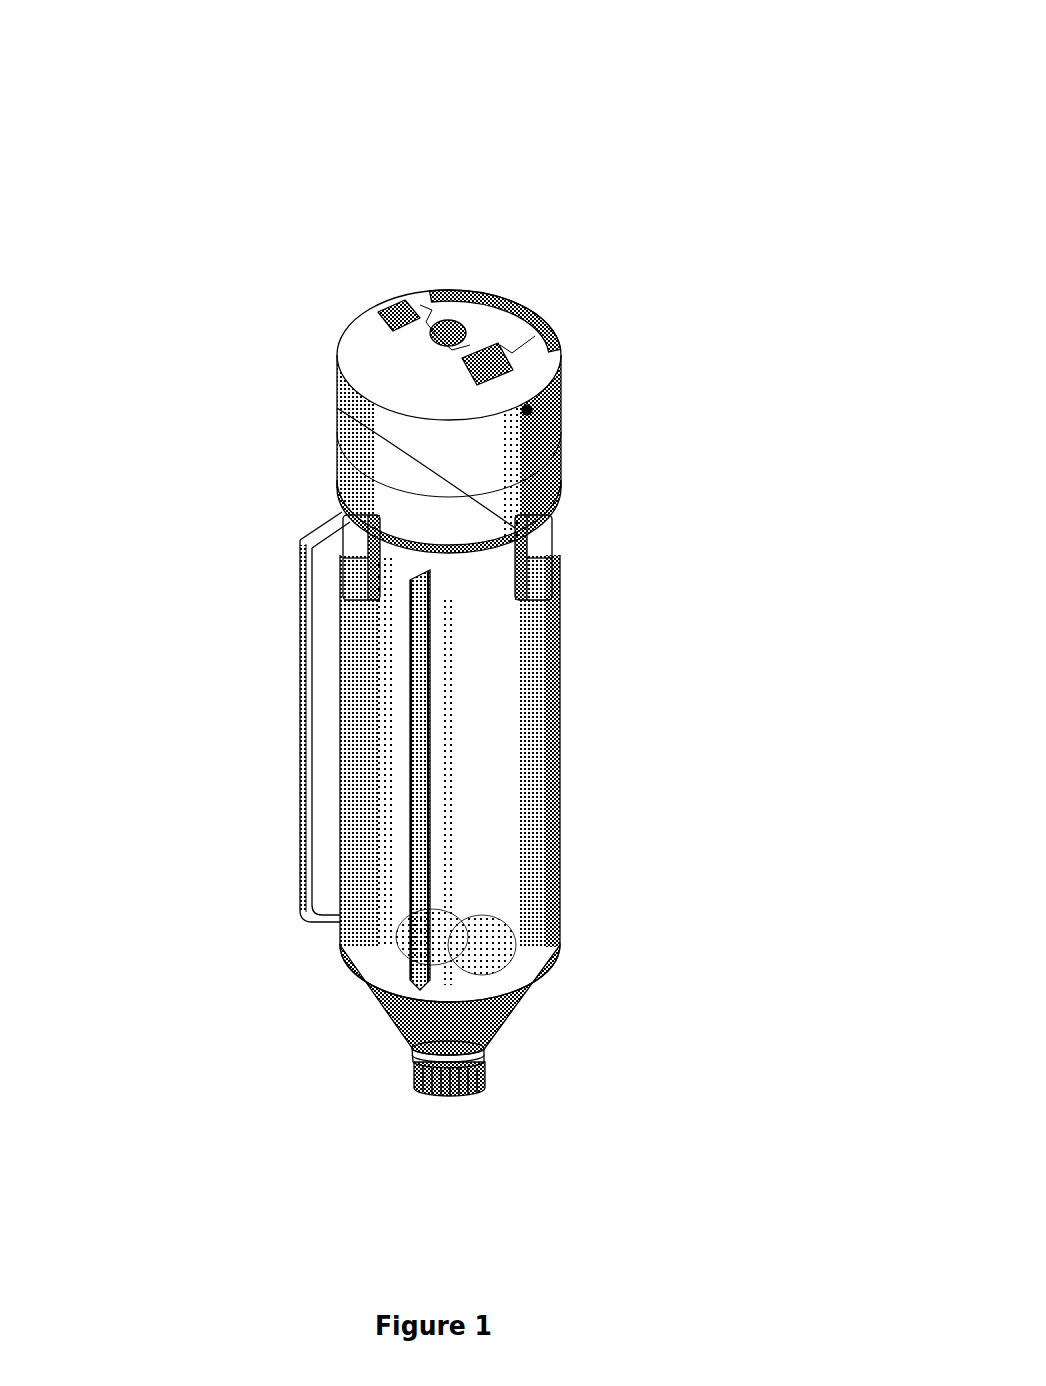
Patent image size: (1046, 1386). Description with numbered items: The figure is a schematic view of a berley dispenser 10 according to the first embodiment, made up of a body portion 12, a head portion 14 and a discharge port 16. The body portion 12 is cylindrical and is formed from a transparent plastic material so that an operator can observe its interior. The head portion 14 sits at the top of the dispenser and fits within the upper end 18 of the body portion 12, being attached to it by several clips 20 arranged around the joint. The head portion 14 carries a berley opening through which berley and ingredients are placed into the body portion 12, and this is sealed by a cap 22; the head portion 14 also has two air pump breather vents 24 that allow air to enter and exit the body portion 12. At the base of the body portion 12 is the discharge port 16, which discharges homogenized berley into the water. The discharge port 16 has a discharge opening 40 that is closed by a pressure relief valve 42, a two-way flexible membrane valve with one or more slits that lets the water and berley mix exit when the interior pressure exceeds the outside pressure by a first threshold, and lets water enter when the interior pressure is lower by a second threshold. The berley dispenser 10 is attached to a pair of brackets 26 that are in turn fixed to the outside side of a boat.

The berley dispenser 10 is at (694, 137).
The body portion 12 is at (560, 717).
The head portion 14 is at (337, 340).
The discharge port 16 is at (397, 1100).
The upper end 18 is at (340, 510).
The clips 20 is at (545, 528).
The cap 22 is at (516, 338).
The air pump breather vents 24 is at (390, 310).
The brackets 26 is at (305, 775).
The discharge opening 40 is at (475, 1090).
The pressure relief valve 42 is at (468, 1030).